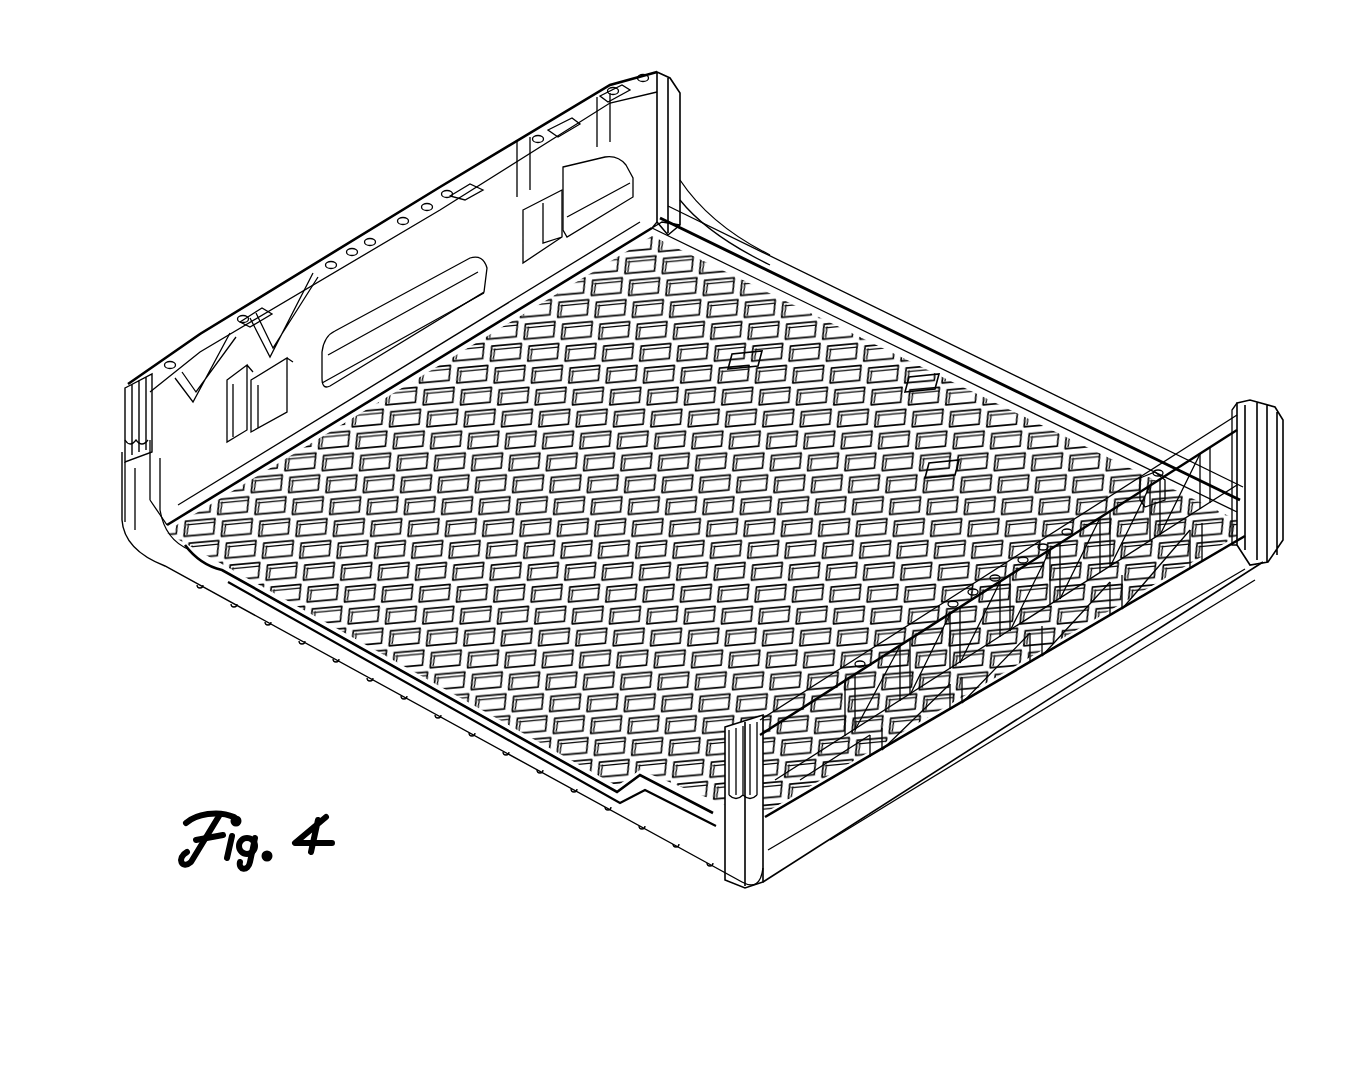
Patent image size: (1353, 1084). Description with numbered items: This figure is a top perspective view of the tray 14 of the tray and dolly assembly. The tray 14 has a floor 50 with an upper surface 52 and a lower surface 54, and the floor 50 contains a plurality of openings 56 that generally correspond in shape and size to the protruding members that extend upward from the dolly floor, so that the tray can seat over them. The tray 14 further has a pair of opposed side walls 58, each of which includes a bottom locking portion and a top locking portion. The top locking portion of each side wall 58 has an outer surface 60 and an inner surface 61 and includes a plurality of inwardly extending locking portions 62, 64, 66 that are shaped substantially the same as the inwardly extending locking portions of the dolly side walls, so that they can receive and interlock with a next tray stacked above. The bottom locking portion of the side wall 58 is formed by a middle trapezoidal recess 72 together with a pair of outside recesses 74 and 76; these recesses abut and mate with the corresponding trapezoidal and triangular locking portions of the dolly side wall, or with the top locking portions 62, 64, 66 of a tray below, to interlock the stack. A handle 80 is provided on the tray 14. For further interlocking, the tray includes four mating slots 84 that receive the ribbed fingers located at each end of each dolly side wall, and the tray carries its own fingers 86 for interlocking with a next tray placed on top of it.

The tray 14 is at (277, 636).
The floor 50 is at (853, 352).
The upper surface 52 is at (920, 395).
The lower surface 54 is at (550, 786).
The openings 56 is at (735, 357).
The side wall 58 is at (683, 116).
The outer surface 60 is at (1145, 522).
The inner surface 61 is at (637, 142).
The inwardly extending locking portion 62 is at (337, 253).
The inwardly extending locking portion 64 is at (207, 337).
The inwardly extending locking portion 66 is at (560, 128).
The middle trapezoidal recess 72 is at (990, 717).
The outside recess 74 is at (870, 803).
The outside recess 76 is at (1160, 608).
The handle 80 is at (425, 287).
The mating slots 84 is at (790, 868).
The fingers 86 is at (133, 395).